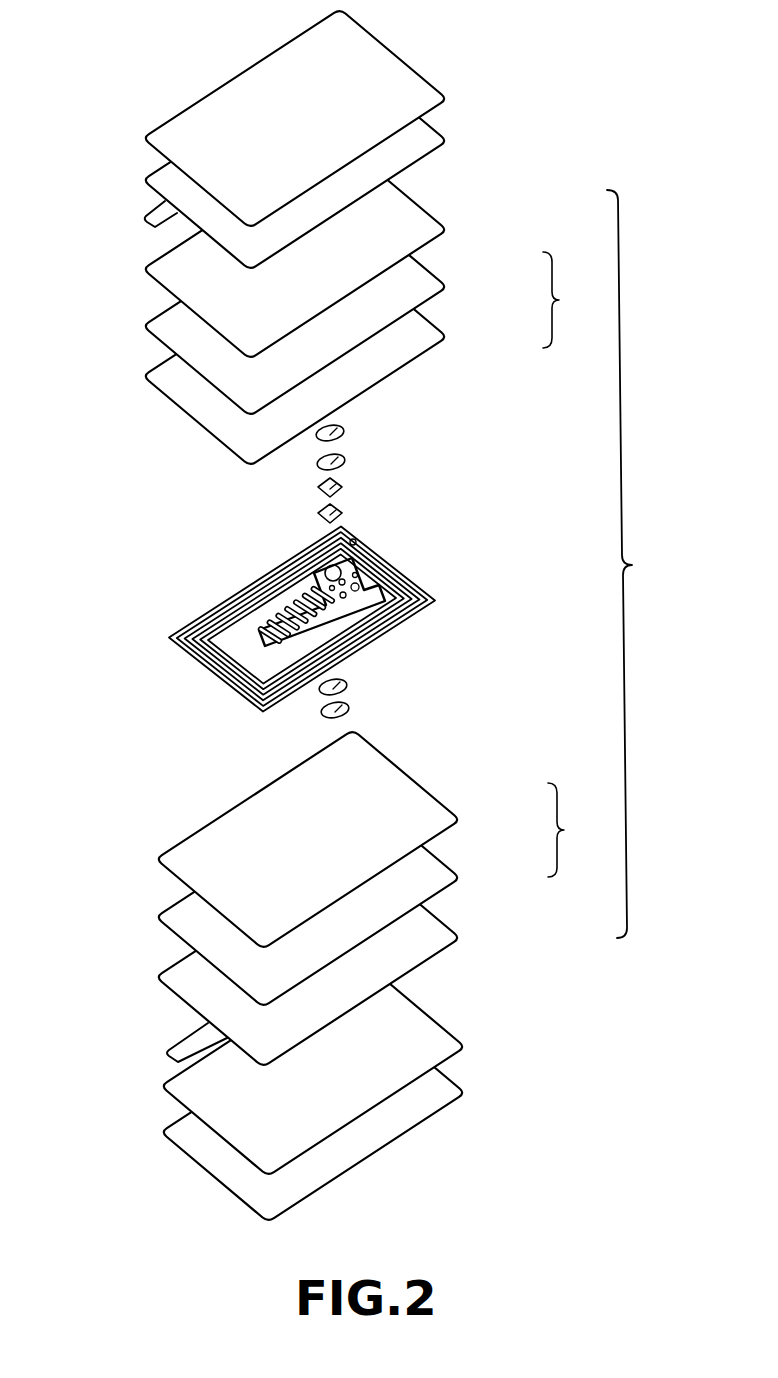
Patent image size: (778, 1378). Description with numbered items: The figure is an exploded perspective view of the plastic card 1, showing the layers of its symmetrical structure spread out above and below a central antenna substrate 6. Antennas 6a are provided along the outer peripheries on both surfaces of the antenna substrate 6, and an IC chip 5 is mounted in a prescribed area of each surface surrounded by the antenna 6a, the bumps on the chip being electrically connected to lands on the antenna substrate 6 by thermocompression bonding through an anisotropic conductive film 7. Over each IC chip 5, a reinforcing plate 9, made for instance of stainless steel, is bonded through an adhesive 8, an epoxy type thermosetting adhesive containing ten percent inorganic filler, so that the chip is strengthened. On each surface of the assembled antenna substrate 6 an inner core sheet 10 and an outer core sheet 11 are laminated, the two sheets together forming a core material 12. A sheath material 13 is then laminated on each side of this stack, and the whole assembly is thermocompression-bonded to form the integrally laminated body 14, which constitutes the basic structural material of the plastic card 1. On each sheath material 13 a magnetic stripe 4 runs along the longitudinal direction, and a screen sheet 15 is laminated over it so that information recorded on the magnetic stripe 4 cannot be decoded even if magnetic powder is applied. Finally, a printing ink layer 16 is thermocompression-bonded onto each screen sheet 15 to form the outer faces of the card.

The plastic card 1 is at (96, 99).
The magnetic stripe 4 is at (150, 222).
The IC chip 5 is at (342, 485).
The antenna substrate 6 is at (437, 598).
The antenna 6a is at (233, 675).
The anisotropic conductive film 7 is at (342, 511).
The adhesive 8 is at (345, 458).
The reinforcing plate 9 is at (344, 428).
The inner core sheet 10 is at (440, 331).
The outer core sheet 11 is at (440, 281).
The core material 12 is at (574, 564).
The sheath material 13 is at (440, 223).
The laminated body 14 is at (640, 564).
The screen sheet 15 is at (439, 132).
The printing ink layer 16 is at (243, 100).